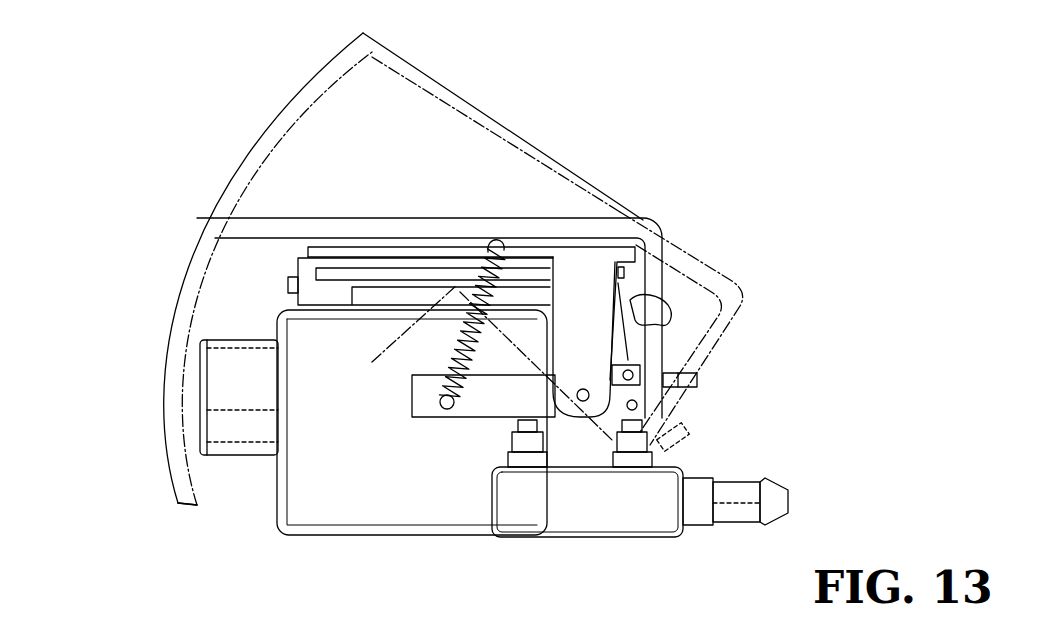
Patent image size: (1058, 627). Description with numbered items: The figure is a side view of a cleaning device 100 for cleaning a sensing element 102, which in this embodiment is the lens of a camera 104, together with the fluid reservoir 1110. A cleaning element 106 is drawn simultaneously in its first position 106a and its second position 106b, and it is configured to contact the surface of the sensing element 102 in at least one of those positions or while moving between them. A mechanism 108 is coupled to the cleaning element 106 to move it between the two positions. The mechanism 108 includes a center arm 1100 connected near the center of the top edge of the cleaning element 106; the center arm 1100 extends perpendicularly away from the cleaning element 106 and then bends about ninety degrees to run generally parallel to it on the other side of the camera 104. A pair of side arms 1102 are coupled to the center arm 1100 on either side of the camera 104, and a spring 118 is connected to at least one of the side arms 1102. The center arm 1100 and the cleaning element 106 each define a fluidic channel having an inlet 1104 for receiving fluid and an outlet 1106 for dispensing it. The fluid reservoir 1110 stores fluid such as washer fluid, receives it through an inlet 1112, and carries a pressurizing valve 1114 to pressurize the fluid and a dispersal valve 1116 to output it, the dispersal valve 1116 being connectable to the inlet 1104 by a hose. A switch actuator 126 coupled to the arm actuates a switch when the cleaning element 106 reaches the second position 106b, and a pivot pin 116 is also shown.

The cleaning device 100 is at (112, 398).
The sensing element 102 is at (217, 340).
The camera 104 is at (473, 515).
The cleaning element 106 is at (267, 143).
The first position 106a is at (285, 100).
The second position 106b is at (186, 244).
The mechanism 108 is at (667, 211).
The pivot pin 116 is at (582, 400).
The spring 118 is at (487, 287).
The switch actuator 126 is at (672, 315).
The center arm 1100 is at (467, 117).
The side arms 1102 is at (420, 400).
The inlet 1104 is at (690, 437).
The outlet 1106 is at (203, 506).
The fluid reservoir 1110 is at (620, 522).
The inlet 1112 is at (793, 497).
The pressurizing valve 1114 is at (517, 438).
The dispersal valve 1116 is at (648, 441).